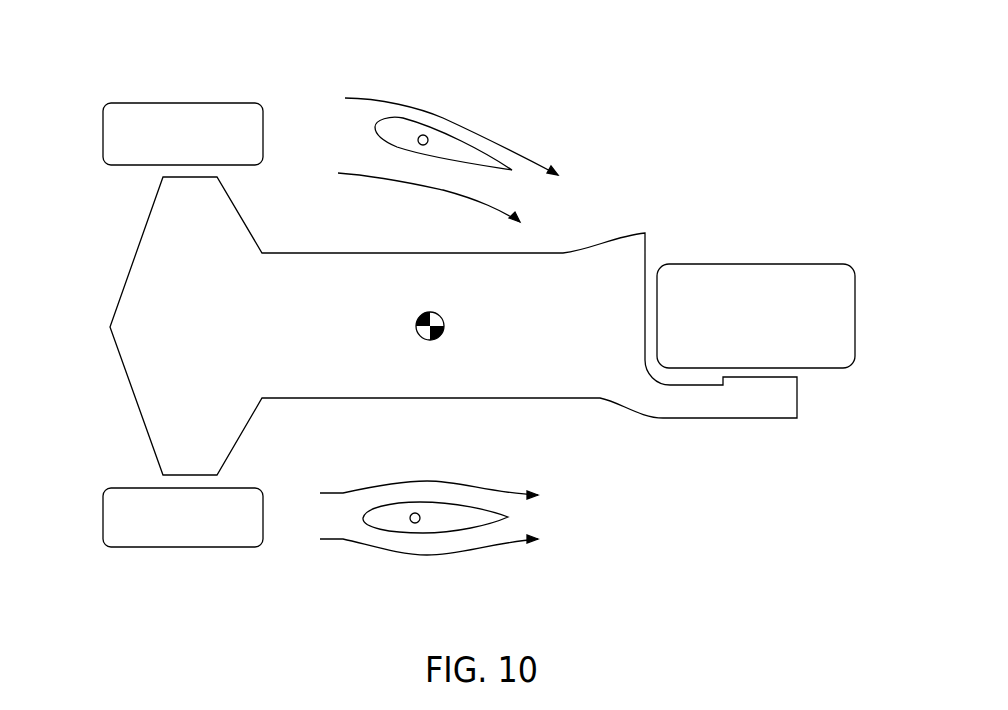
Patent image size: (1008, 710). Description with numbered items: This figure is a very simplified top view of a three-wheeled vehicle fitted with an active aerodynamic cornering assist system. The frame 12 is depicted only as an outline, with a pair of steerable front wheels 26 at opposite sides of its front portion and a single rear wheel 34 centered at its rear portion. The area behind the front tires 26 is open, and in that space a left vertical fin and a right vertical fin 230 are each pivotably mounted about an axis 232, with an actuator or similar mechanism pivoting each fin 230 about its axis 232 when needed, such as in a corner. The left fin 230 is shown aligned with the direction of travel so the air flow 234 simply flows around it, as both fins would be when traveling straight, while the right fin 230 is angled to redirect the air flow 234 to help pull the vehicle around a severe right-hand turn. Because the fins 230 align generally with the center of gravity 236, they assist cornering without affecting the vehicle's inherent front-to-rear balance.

The frame 12 is at (137, 288).
The steerable front wheels 26 is at (176, 103).
The rear wheel 34 is at (842, 312).
The vertical fin 230 is at (443, 142).
The axis 232 is at (427, 135).
The air flow 234 is at (532, 160).
The center of gravity 236 is at (442, 338).